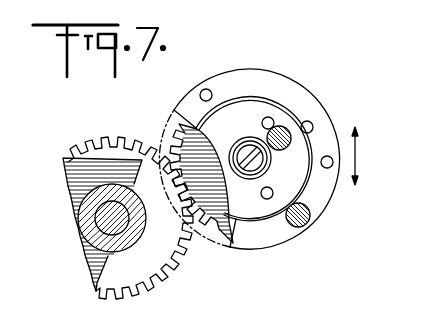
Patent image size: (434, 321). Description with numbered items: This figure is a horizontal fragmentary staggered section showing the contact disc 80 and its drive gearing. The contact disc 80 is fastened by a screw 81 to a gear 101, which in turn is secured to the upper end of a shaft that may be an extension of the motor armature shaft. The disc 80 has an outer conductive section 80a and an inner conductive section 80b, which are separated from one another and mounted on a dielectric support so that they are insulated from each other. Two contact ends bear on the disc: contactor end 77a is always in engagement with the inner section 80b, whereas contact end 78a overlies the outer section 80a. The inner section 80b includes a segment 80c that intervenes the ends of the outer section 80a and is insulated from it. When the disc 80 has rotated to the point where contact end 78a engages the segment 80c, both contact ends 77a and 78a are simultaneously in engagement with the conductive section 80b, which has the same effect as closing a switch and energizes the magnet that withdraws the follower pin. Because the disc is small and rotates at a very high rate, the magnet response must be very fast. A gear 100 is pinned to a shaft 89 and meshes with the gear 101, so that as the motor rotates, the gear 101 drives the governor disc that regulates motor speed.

The contact disc 80 is at (239, 158).
The outer conductive section 80a is at (284, 88).
The inner conductive section 80b is at (236, 108).
The segment 80c is at (172, 122).
The lower end of contact 77a is at (288, 129).
The lower end of contact 78a is at (300, 227).
The screw 81 is at (253, 176).
The shaft 89 is at (100, 212).
The gear 100 is at (110, 267).
The gear 101 is at (216, 226).